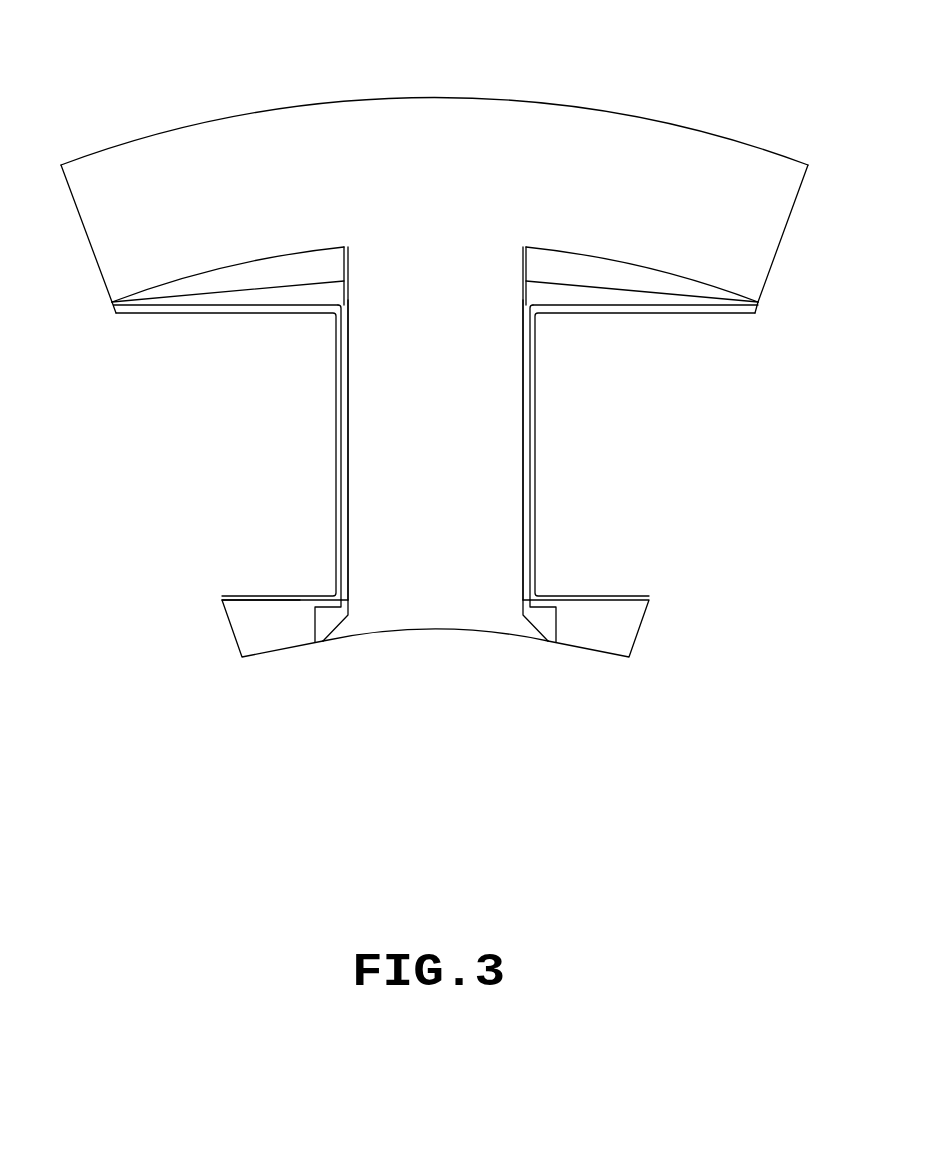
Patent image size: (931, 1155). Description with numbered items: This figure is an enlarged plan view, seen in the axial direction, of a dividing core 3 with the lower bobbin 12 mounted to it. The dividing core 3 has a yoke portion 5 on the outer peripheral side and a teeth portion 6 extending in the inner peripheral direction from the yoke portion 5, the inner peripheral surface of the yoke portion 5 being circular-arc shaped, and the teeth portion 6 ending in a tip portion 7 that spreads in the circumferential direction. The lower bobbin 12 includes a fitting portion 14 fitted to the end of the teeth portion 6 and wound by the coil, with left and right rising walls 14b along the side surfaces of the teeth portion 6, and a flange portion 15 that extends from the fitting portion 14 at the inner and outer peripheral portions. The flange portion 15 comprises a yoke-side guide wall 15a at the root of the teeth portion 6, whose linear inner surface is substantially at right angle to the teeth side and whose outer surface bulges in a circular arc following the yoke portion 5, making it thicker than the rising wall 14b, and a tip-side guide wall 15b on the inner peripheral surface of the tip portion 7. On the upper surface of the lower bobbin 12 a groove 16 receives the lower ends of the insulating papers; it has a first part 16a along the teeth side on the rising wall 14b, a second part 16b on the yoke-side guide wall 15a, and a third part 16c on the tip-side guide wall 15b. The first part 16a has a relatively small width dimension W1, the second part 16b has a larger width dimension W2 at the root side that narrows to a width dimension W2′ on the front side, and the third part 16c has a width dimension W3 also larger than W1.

The dividing core 3 is at (571, 96).
The yoke portion 5 is at (279, 134).
The teeth portion 6 is at (478, 419).
The tip portion 7 is at (335, 636).
The lower bobbin 12 is at (648, 322).
The fitting portion 14 is at (330, 452).
The rising wall 14b is at (535, 465).
The flange portion 15 is at (598, 660).
The yoke-side guide wall 15a is at (606, 258).
The tip-side guide wall 15b is at (262, 598).
The groove 16 is at (322, 262).
The first part 16a is at (346, 380).
The second part 16b is at (272, 296).
The third part 16c is at (556, 609).
The width dimension W1 is at (505, 529).
The width dimension W2 is at (560, 240).
The width dimension W2′ is at (718, 240).
The width dimension W3 is at (554, 589).